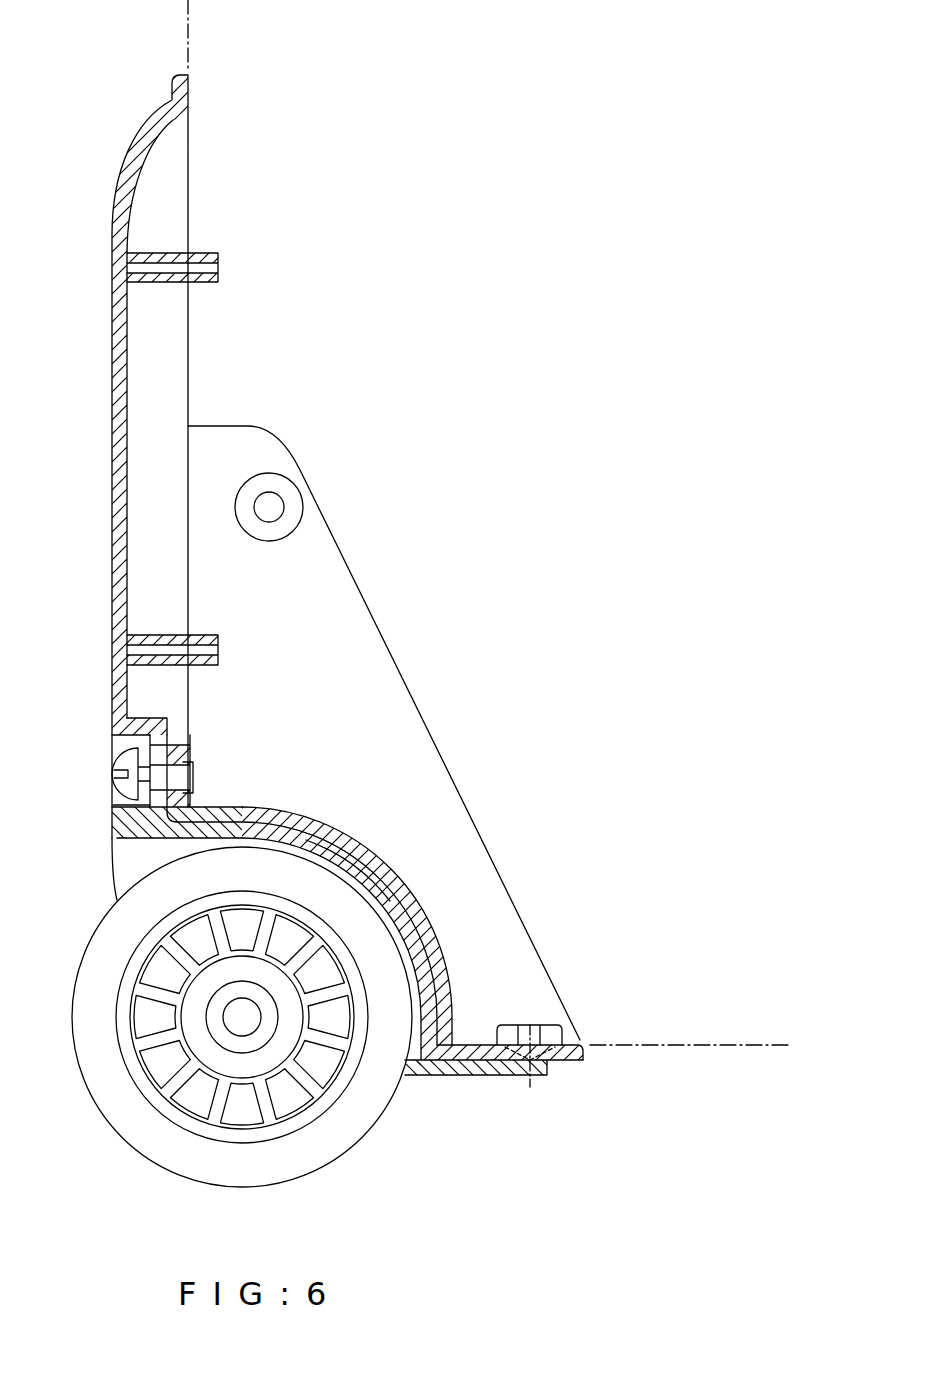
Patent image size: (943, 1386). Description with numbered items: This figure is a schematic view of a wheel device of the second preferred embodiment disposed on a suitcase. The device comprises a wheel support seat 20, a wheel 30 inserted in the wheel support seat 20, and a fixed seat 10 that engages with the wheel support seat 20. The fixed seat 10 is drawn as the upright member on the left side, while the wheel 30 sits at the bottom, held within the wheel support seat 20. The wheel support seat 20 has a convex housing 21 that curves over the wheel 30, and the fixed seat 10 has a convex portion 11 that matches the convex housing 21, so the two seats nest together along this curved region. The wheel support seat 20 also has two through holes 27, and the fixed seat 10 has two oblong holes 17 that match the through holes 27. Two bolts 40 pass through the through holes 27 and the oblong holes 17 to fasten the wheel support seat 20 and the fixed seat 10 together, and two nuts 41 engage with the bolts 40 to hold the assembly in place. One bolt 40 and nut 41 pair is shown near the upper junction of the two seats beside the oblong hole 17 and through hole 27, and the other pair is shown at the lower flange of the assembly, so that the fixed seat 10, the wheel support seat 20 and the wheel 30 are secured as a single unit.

The fixed seat 10 is at (122, 470).
The convex portion 11 is at (326, 830).
The oblong holes 17 is at (160, 757).
The wheel support seat 20 is at (132, 860).
The convex housing 21 is at (362, 866).
The through holes 27 is at (118, 797).
The wheel 30 is at (122, 1115).
The bolts 40 is at (118, 758).
The nuts 41 is at (182, 757).